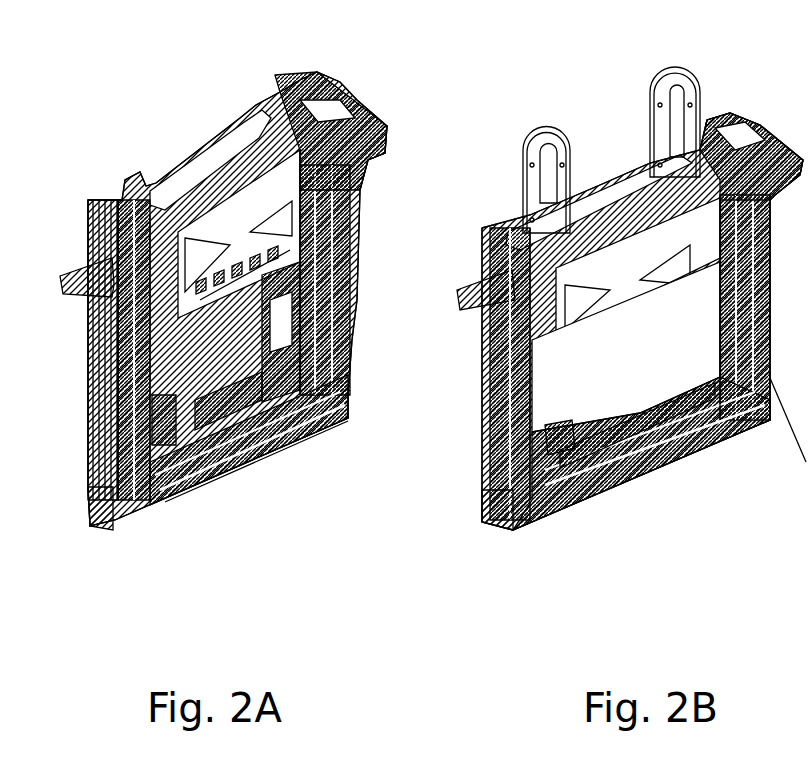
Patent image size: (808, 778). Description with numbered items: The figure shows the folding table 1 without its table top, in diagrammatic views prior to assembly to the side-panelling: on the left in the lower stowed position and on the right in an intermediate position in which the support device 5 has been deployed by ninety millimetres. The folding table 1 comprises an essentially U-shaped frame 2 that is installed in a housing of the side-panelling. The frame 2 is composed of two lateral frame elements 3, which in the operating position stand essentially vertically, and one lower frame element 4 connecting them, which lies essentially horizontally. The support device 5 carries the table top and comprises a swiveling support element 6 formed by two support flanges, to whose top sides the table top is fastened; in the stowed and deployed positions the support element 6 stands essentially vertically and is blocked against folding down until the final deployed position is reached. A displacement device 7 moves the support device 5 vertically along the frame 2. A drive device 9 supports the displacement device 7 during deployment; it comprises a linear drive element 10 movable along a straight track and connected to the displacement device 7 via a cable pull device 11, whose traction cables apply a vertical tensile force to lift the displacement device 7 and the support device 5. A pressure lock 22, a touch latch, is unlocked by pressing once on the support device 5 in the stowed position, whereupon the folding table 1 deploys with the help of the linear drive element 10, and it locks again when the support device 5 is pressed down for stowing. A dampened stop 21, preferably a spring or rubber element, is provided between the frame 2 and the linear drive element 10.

In FIG. 2A, the folding table 1 is at (241, 323).
In FIG. 2A, the frame 2 is at (199, 495).
In FIG. 2A, the lateral frame elements 3 is at (351, 294).
In FIG. 2B, the lateral frame elements 3 is at (495, 390).
In FIG. 2A, the lower frame element 4 is at (154, 500).
In FIG. 2B, the lower frame element 4 is at (633, 466).
In FIG. 2B, the support device 5 is at (600, 308).
In FIG. 2B, the swiveling support element 6 is at (650, 131).
In FIG. 2A, the displacement device 7 is at (314, 358).
In FIG. 2A, the drive device 9 is at (185, 428).
In FIG. 2A, the linear drive element 10 is at (218, 426).
In FIG. 2B, the linear drive element 10 is at (616, 422).
In FIG. 2A, the cable pull device 11 is at (218, 464).
In FIG. 2B, the dampened stop 21 is at (716, 410).
In FIG. 2B, the pressure lock 22 is at (547, 440).